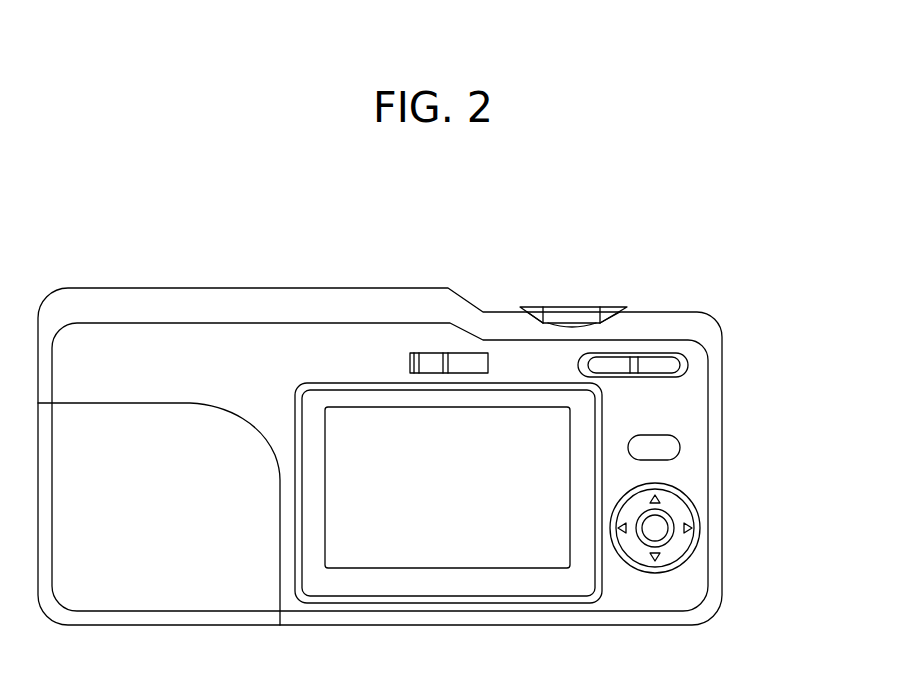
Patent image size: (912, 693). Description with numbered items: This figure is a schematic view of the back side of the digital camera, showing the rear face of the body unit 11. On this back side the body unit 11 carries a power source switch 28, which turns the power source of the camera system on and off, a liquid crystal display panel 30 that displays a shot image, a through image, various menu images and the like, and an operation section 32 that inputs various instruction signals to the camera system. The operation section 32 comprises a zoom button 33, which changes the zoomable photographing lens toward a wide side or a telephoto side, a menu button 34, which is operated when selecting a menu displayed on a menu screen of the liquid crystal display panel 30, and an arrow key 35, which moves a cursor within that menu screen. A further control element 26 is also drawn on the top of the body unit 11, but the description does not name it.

The body unit 11 is at (394, 261).
The zoom lever 26 is at (578, 315).
The power source switch 28 is at (432, 362).
The liquid crystal display panel 30 is at (341, 429).
The operation section 32 is at (767, 386).
The zoom button 33 is at (660, 366).
The menu button 34 is at (676, 450).
The arrow key 35 is at (677, 507).